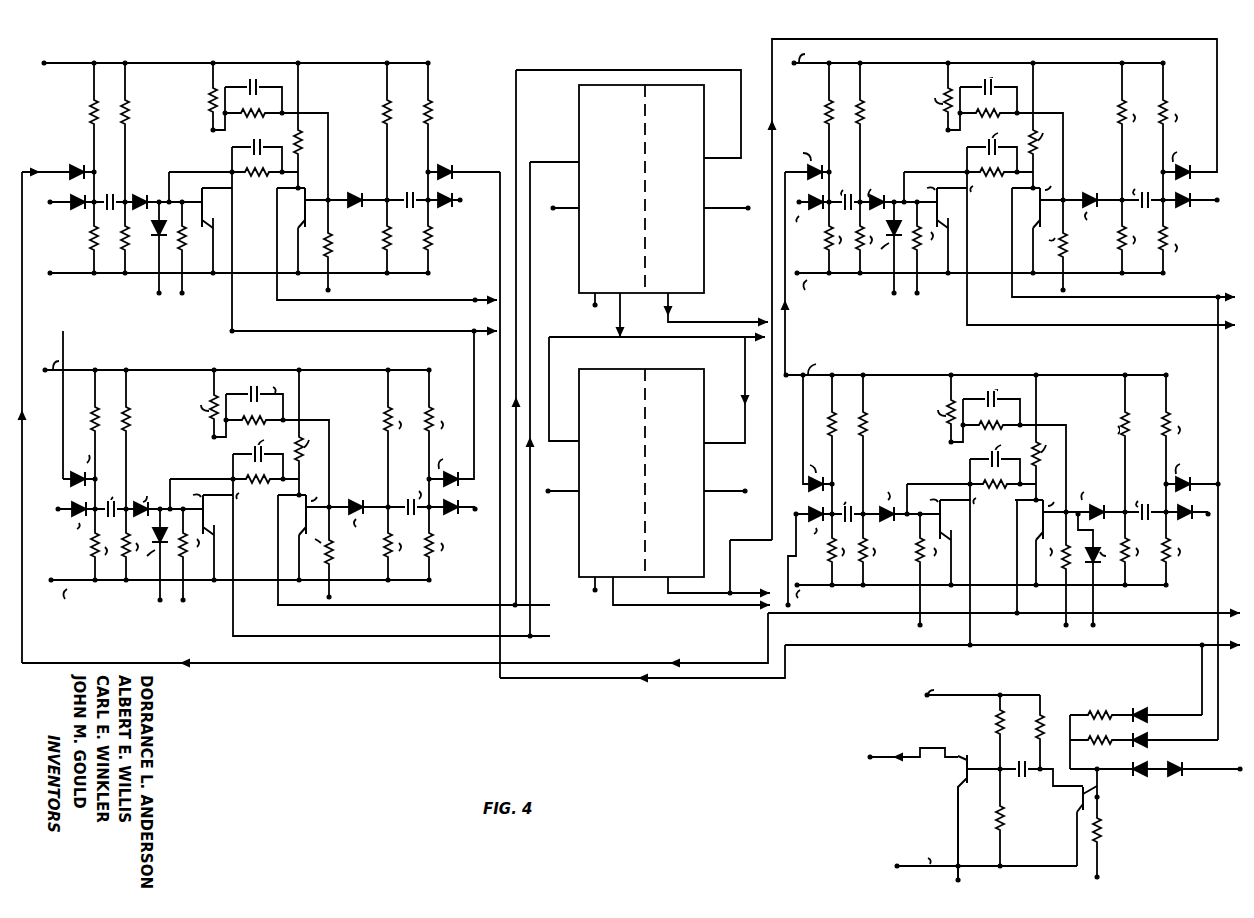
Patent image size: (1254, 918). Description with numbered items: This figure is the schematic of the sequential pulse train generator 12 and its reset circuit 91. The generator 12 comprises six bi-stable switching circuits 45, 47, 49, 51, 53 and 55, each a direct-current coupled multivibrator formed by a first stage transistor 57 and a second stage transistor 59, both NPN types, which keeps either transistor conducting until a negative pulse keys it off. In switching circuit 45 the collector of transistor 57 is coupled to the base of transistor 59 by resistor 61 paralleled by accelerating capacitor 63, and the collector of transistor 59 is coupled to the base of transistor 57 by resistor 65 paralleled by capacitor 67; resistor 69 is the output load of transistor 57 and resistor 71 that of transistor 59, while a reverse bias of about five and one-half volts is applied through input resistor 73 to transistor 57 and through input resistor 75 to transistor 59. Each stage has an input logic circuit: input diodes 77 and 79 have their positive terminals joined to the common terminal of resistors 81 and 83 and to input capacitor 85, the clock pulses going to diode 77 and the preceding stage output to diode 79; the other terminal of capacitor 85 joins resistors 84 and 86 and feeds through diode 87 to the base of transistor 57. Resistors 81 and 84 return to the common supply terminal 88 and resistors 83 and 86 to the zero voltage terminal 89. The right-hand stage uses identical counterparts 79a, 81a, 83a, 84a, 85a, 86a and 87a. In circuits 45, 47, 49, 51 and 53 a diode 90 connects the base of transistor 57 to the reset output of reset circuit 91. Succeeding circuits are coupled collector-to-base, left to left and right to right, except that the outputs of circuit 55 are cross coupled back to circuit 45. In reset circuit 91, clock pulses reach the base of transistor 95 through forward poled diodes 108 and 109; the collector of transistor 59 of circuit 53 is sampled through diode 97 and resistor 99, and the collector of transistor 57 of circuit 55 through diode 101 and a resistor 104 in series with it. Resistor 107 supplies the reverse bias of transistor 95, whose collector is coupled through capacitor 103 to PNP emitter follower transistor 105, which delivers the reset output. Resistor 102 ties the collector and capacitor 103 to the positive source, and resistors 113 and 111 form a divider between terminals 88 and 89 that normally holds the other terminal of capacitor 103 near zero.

The sequential pulse train generator 12 is at (645, 29).
The bi-stable switching circuit 45 is at (200, 41).
The bi-stable switching circuit 47 is at (261, 355).
The bi-stable switching circuit 49 is at (645, 68).
The bi-stable switching circuit 51 is at (645, 363).
The bi-stable switching circuit 53 is at (1007, 34).
The bi-stable switching circuit 55 is at (1019, 354).
The first stage transistor 57 is at (200, 190).
The second stage transistor 59 is at (316, 190).
The resistor 61 is at (253, 121).
The accelerating capacitor 63 is at (252, 84).
The resistor 65 is at (266, 185).
The capacitor 67 is at (257, 141).
The resistor 69 is at (208, 104).
The resistor 71 is at (302, 141).
The input resistor 73 is at (196, 244).
The input resistor 75 is at (320, 238).
The input diode 77 is at (78, 216).
The input diode 79 is at (76, 161).
The input diode 79a is at (442, 152).
The resistor 81 is at (105, 111).
The resistor 81a is at (440, 122).
The resistor 83 is at (104, 240).
The resistor 83a is at (440, 252).
The resistor 84 is at (135, 111).
The resistor 84a is at (398, 122).
The input capacitor 85 is at (108, 196).
The input capacitor 85a is at (400, 195).
The resistor 86 is at (135, 244).
The resistor 86a is at (398, 244).
The diode 87 is at (142, 195).
The diode 87a is at (346, 180).
The common supply terminal 88 is at (78, 50).
The common zero voltage terminal 89 is at (78, 290).
The diode 90 is at (154, 243).
The reset circuit 91 is at (1071, 681).
The transistor 95 is at (1076, 796).
The diode 97 is at (1146, 732).
The resistor 99 is at (1110, 758).
The diode 101 is at (1142, 708).
The resistor 102 is at (1046, 724).
The capacitor 103 is at (1020, 766).
The resistor 104 is at (1092, 696).
The PNP transistor 105 is at (966, 758).
The resistor 107 is at (1104, 826).
The diode 108 is at (1182, 758).
The diode 109 is at (1144, 752).
The resistor 111 is at (1008, 814).
The resistor 113 is at (1004, 728).